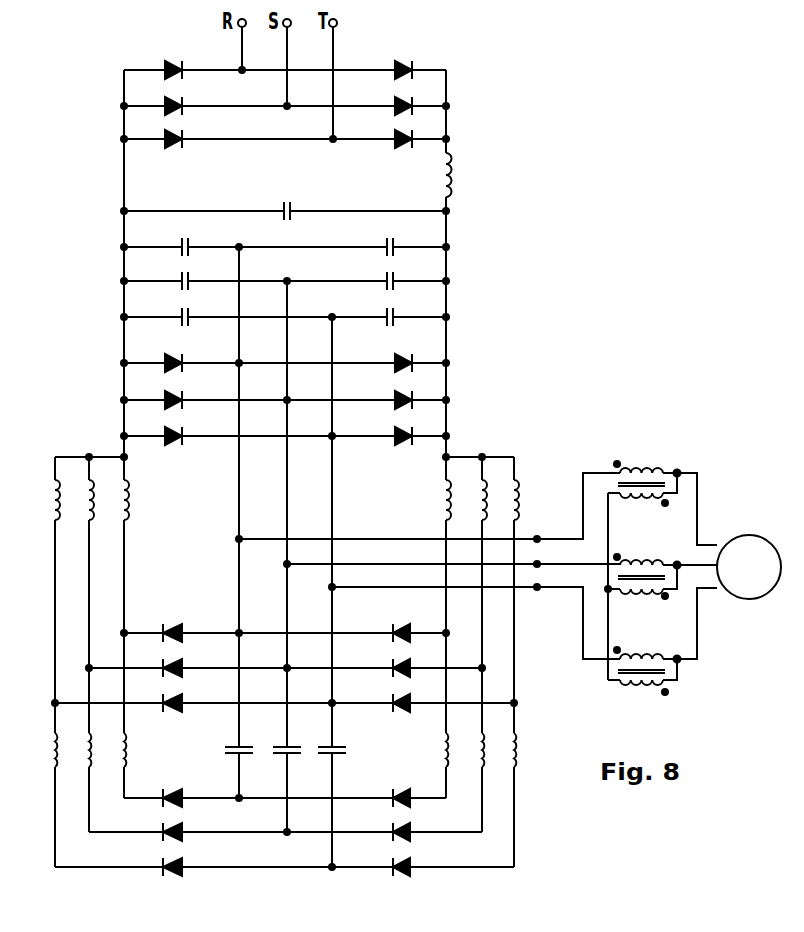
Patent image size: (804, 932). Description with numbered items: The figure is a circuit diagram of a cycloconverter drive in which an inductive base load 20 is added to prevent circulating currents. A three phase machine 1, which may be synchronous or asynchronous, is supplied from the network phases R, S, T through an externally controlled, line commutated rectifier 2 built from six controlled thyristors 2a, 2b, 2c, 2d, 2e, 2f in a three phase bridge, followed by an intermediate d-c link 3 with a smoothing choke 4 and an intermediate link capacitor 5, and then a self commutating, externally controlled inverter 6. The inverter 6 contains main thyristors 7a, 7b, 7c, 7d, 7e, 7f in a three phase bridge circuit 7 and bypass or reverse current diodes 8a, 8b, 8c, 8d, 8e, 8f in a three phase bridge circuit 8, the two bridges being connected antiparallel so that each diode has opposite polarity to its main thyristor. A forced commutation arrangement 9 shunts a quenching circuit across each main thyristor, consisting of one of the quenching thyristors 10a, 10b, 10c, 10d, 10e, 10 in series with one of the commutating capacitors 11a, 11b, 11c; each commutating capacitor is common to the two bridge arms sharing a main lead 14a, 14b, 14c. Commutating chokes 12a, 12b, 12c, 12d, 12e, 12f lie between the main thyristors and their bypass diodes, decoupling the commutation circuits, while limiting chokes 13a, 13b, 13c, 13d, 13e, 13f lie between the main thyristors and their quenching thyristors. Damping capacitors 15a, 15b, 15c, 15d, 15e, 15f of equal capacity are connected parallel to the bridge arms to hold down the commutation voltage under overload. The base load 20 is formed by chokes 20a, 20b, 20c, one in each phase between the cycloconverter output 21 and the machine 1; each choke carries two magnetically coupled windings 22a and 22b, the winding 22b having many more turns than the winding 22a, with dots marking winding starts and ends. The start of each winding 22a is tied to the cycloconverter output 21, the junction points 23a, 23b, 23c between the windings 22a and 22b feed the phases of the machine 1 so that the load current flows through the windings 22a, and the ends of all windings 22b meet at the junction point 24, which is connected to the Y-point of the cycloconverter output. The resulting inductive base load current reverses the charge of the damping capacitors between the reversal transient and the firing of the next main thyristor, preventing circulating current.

The three phase machine 1 is at (769, 540).
The rectifier 2 is at (314, 101).
The controlled thyristor 2a is at (182, 72).
The controlled thyristor 2b is at (182, 108).
The controlled thyristor 2c is at (182, 141).
The controlled thyristor 2d is at (396, 74).
The controlled thyristor 2e is at (396, 110).
The controlled thyristor 2f is at (396, 143).
The intermediate d-c link 3 is at (327, 181).
The smoothing choke 4 is at (455, 186).
The intermediate link capacitor 5 is at (292, 214).
The inverter 6 is at (206, 545).
The three phase bridge circuit 7 is at (262, 662).
The main thyristor 7a is at (178, 630).
The main thyristor 7b is at (178, 665).
The main thyristor 7c is at (178, 700).
The main thyristor 7d is at (395, 630).
The main thyristor 7e is at (395, 665).
The main thyristor 7f is at (395, 700).
The three phase bridge circuit 8 is at (266, 392).
The bypass diode 8a is at (182, 360).
The bypass diode 8b is at (182, 397).
The bypass diode 8c is at (182, 433).
The bypass diode 8d is at (393, 360).
The bypass diode 8e is at (393, 397).
The bypass diode 8f is at (393, 433).
The forced commutation arrangement 9 is at (258, 823).
The quenching thyristor 10 is at (395, 865).
The quenching thyristor 10a is at (178, 795).
The quenching thyristor 10b is at (179, 830).
The quenching thyristor 10c is at (179, 865).
The quenching thyristor 10d is at (395, 796).
The quenching thyristor 10e is at (395, 830).
The commutating capacitor 11a is at (241, 745).
The commutating capacitor 11b is at (289, 745).
The commutating capacitor 11c is at (334, 745).
The commutating choke 12a is at (130, 487).
The commutating choke 12b is at (85, 483).
The commutating choke 12c is at (52, 483).
The commutating choke 12d is at (441, 493).
The commutating choke 12e is at (487, 485).
The commutating choke 12f is at (518, 485).
The limiting choke 13a is at (129, 750).
The limiting choke 13b is at (83, 738).
The limiting choke 13c is at (50, 757).
The limiting choke 13d is at (441, 750).
The limiting choke 13e is at (488, 740).
The limiting choke 13f is at (520, 762).
The main lead 14a is at (240, 360).
The main lead 14b is at (288, 397).
The main lead 14c is at (331, 433).
The damping capacitor 15a is at (188, 244).
The damping capacitor 15b is at (188, 278).
The damping capacitor 15c is at (188, 313).
The damping capacitor 15d is at (387, 244).
The damping capacitor 15e is at (387, 278).
The damping capacitor 15f is at (387, 313).
The inductive base load 20 is at (683, 628).
The choke 20a is at (672, 486).
The choke 20b is at (670, 583).
The choke 20c is at (670, 685).
The cycloconverter output 21 is at (539, 586).
The winding 22a is at (648, 468).
The winding 22b is at (647, 500).
The junction point 23a is at (679, 471).
The junction point 23b is at (678, 562).
The junction point 23c is at (680, 662).
The junction point 24 is at (607, 590).